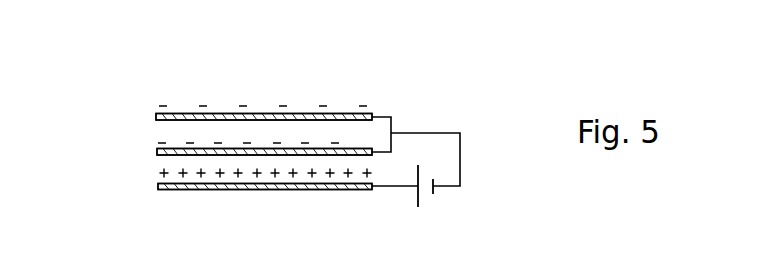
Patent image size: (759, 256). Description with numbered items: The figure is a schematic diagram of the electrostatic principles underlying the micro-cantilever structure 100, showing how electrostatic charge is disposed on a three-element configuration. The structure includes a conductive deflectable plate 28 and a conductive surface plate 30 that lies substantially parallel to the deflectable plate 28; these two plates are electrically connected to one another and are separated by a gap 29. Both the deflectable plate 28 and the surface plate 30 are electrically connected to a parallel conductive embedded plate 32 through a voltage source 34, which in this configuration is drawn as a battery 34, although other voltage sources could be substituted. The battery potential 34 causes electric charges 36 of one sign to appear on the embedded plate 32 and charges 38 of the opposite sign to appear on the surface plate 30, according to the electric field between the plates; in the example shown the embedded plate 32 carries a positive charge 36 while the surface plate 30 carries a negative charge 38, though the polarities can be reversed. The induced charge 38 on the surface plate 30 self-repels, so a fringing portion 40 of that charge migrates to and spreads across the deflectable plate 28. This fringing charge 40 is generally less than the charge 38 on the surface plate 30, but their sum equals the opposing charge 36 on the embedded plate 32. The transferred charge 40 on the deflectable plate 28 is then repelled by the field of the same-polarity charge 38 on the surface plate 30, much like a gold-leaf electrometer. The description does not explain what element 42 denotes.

The micro-cantilever structure 100 is at (188, 78).
The conductive deflectable plate 28 is at (155, 115).
The gap 29 is at (158, 135).
The conductive surface plate 30 is at (156, 148).
The embedded plate 32 is at (157, 184).
The voltage source 34 is at (428, 202).
The electric charges 36 is at (330, 175).
The charges 38 is at (365, 141).
The fringing charge 40 is at (362, 105).
The substrate 42 is at (265, 223).